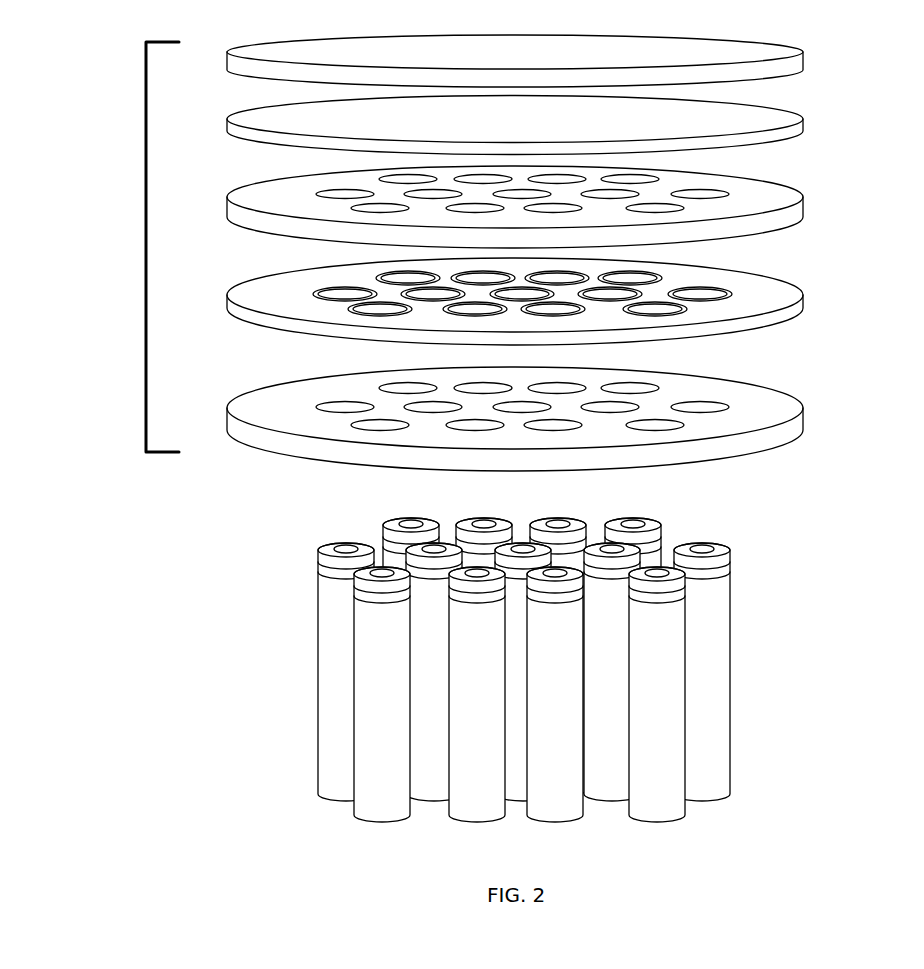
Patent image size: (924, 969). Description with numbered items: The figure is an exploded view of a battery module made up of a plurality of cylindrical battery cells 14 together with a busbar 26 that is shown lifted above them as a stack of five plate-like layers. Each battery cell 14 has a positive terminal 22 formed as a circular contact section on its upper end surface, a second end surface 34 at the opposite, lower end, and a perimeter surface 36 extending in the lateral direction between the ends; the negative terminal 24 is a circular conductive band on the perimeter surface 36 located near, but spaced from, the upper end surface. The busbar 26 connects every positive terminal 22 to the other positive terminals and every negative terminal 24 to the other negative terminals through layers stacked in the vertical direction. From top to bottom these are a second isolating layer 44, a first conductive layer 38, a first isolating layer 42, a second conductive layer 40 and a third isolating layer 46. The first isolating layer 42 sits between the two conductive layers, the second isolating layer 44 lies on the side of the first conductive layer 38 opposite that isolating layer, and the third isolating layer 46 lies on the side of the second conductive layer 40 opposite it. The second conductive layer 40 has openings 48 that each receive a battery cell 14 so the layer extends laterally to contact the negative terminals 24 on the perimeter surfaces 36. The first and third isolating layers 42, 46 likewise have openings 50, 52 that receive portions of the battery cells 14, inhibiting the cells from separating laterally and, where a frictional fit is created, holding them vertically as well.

The battery cell 14 is at (768, 640).
The positive terminal 22 is at (549, 660).
The negative terminal 24 is at (722, 572).
The busbar 26 is at (146, 262).
The second end surface 34 is at (657, 822).
The perimeter surface 36 is at (727, 692).
The first conductive layer 38 is at (800, 130).
The second conductive layer 40 is at (566, 300).
The first isolating layer 42 is at (566, 201).
The second isolating layer 44 is at (792, 68).
The third isolating layer 46 is at (562, 419).
The openings 48 is at (634, 279).
The openings 50 is at (638, 180).
The openings 52 is at (638, 388).